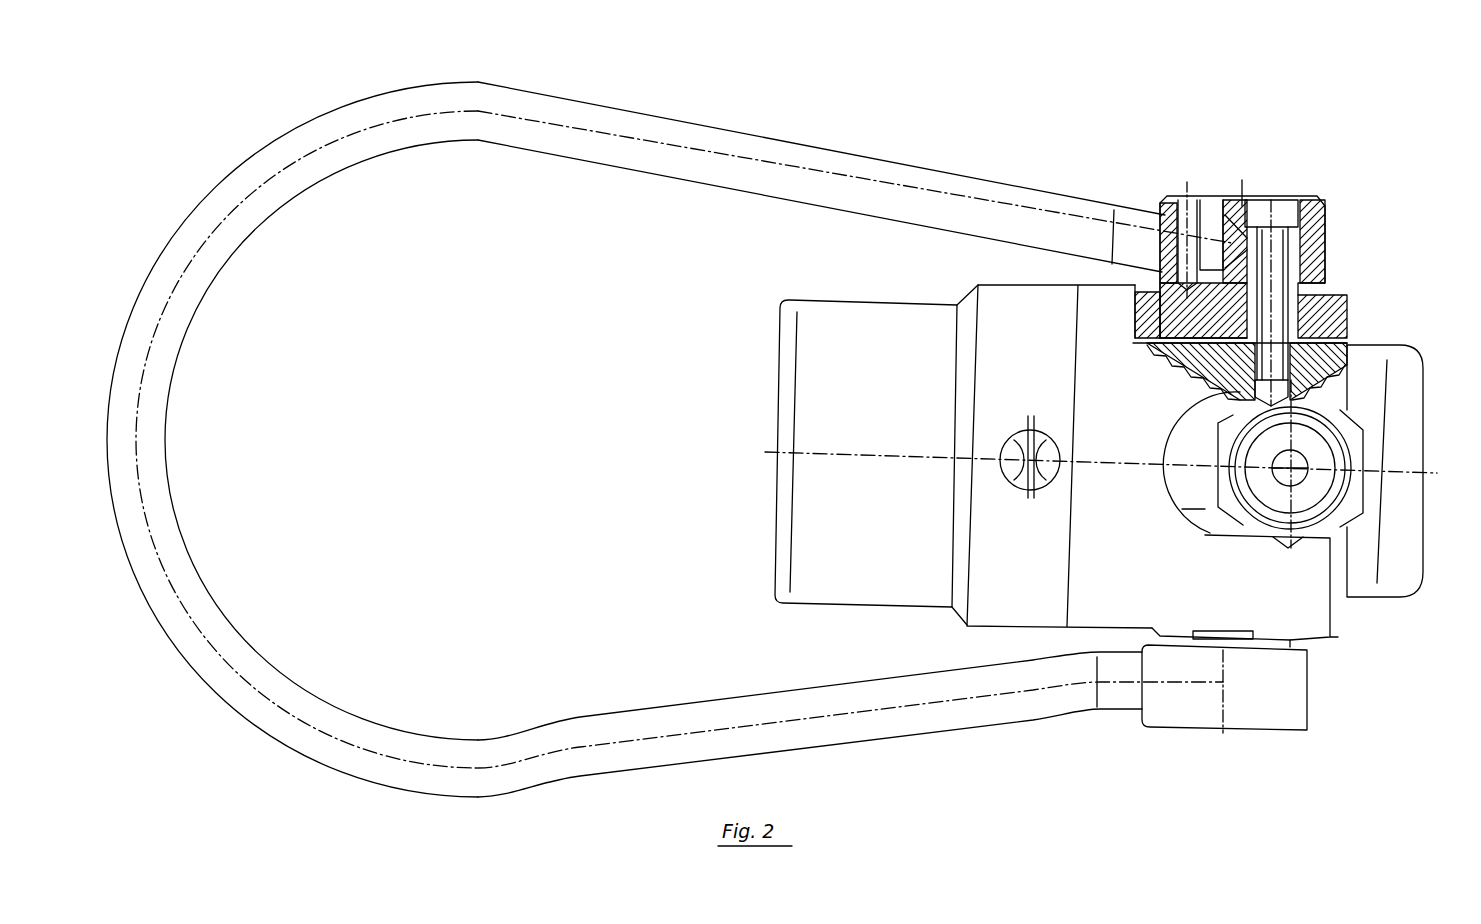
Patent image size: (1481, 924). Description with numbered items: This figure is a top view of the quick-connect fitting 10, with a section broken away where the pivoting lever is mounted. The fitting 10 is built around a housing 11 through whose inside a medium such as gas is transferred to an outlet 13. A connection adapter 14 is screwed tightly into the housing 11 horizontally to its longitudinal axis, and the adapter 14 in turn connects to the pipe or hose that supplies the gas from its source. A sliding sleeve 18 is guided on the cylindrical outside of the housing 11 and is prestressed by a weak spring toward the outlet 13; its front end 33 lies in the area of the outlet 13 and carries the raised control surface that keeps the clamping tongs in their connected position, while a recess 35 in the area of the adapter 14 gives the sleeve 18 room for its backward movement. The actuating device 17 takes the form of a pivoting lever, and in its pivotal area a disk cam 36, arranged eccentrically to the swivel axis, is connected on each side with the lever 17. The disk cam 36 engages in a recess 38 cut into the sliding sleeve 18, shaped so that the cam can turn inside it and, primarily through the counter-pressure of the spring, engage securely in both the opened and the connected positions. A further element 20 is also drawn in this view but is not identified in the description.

The quick-connect fitting 10 is at (232, 79).
The housing 11 is at (1392, 393).
The outlet 13 is at (716, 483).
The connection adapter 14 is at (1333, 540).
The actuating device 17 is at (883, 720).
The sliding sleeve 18 is at (1127, 581).
The screw 20 is at (1017, 467).
The front end 33 is at (825, 353).
The recess 35 is at (1203, 507).
The disk cam 36 is at (1208, 300).
The recess 38 is at (1160, 320).